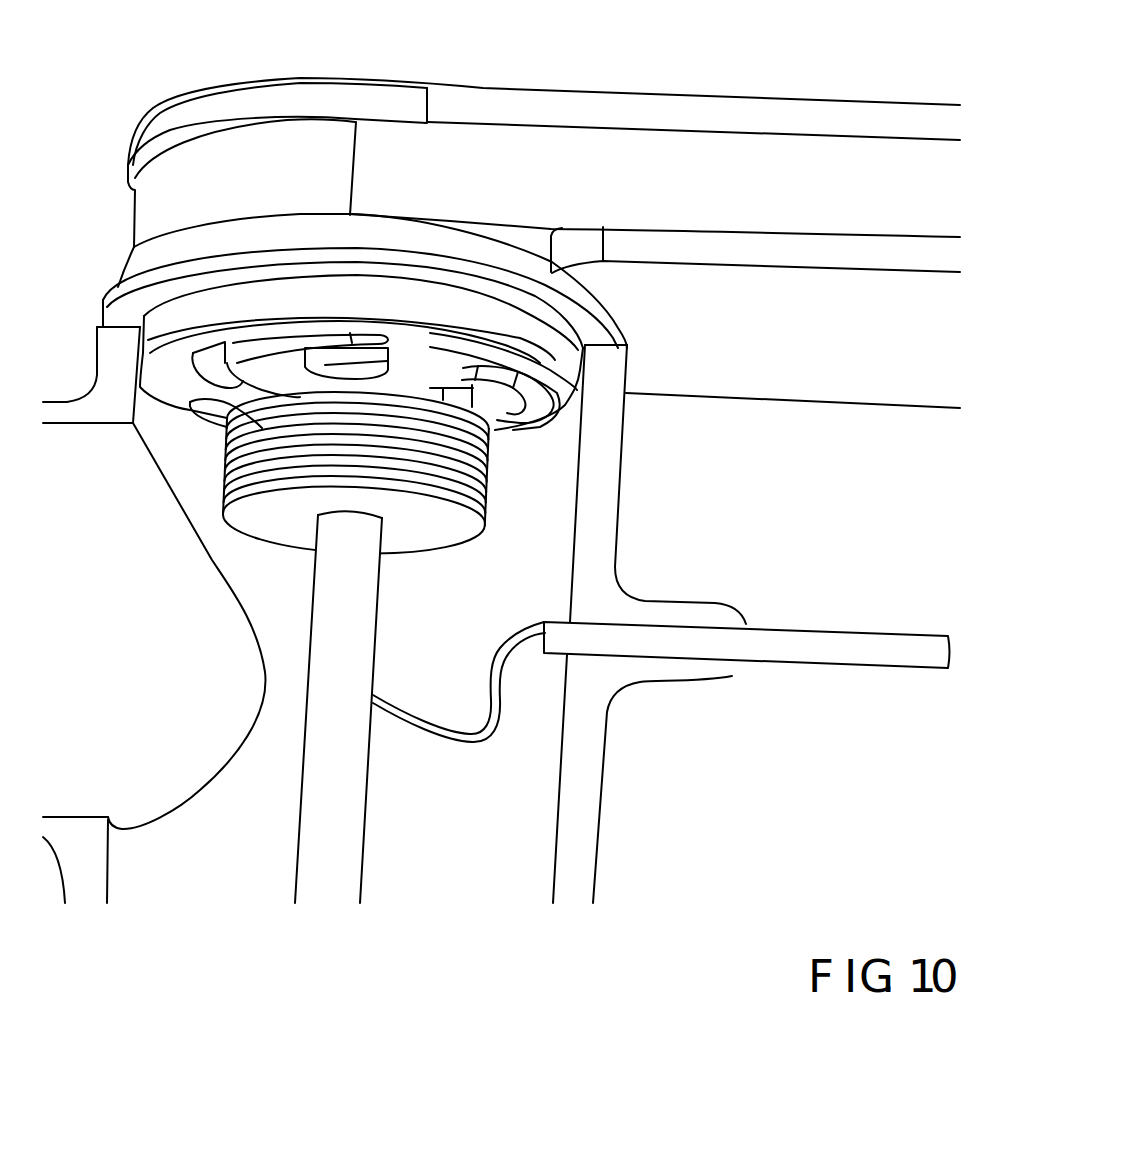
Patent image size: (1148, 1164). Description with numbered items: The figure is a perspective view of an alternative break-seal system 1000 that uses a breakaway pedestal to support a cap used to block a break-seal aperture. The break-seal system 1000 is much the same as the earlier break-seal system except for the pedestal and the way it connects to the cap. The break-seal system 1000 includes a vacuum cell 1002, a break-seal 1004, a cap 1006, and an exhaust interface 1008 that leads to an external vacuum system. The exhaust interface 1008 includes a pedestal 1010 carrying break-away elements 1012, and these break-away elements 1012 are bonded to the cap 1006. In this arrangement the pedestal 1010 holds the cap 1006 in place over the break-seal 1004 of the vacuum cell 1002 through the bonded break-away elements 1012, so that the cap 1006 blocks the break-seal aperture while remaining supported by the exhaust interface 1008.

The break-seal system 1000 is at (403, 55).
The vacuum cell 1002 is at (609, 191).
The break-seal 1004 is at (123, 293).
The cap 1006 is at (520, 377).
The exhaust interface 1008 is at (640, 500).
The pedestal 1010 is at (573, 400).
The break-away elements 1012 is at (213, 398).